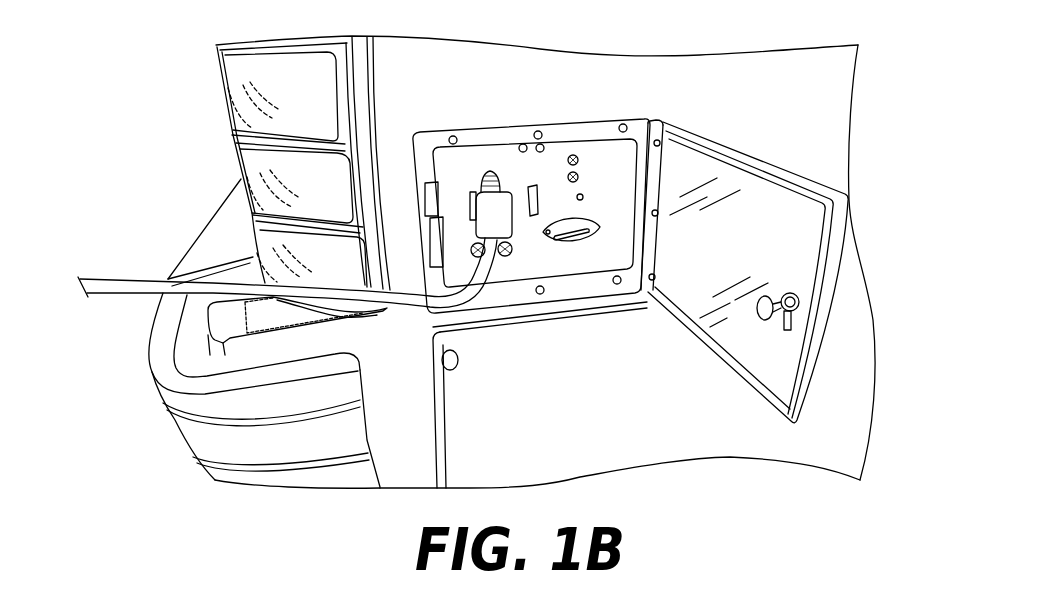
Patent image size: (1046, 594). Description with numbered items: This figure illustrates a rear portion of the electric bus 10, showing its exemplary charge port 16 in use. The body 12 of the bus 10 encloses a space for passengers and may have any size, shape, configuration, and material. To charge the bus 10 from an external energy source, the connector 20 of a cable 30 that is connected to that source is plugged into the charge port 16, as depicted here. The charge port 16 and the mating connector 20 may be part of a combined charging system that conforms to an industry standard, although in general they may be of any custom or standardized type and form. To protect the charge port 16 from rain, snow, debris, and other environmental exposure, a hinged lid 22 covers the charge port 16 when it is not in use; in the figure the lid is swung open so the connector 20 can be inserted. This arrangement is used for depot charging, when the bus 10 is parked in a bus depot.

The bus 10 is at (153, 165).
The body 12 is at (817, 98).
The charge port 16 is at (485, 160).
The connector 20 is at (500, 215).
The hinged lid 22 is at (803, 253).
The cable 30 is at (116, 296).